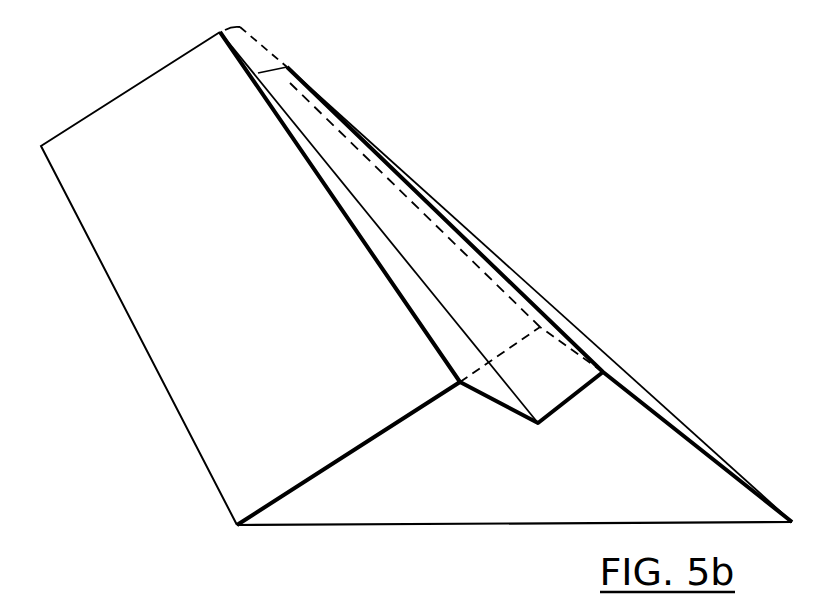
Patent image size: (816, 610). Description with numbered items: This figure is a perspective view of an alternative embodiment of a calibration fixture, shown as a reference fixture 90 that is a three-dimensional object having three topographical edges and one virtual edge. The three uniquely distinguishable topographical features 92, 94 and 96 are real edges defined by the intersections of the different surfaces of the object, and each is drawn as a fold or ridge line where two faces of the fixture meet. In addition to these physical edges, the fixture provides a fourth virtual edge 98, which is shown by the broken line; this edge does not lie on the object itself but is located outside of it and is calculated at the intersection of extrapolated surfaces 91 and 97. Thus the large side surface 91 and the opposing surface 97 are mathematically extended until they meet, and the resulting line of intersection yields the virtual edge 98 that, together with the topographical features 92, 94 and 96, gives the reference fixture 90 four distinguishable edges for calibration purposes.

The reference fixture 90 is at (416, 271).
The extrapolated surface 91 is at (144, 225).
The topographical feature 92 is at (377, 262).
The topographical feature 94 is at (467, 334).
The topographical feature 96 is at (548, 320).
The extrapolated surface 97 is at (466, 213).
The virtual edge 98 is at (499, 274).